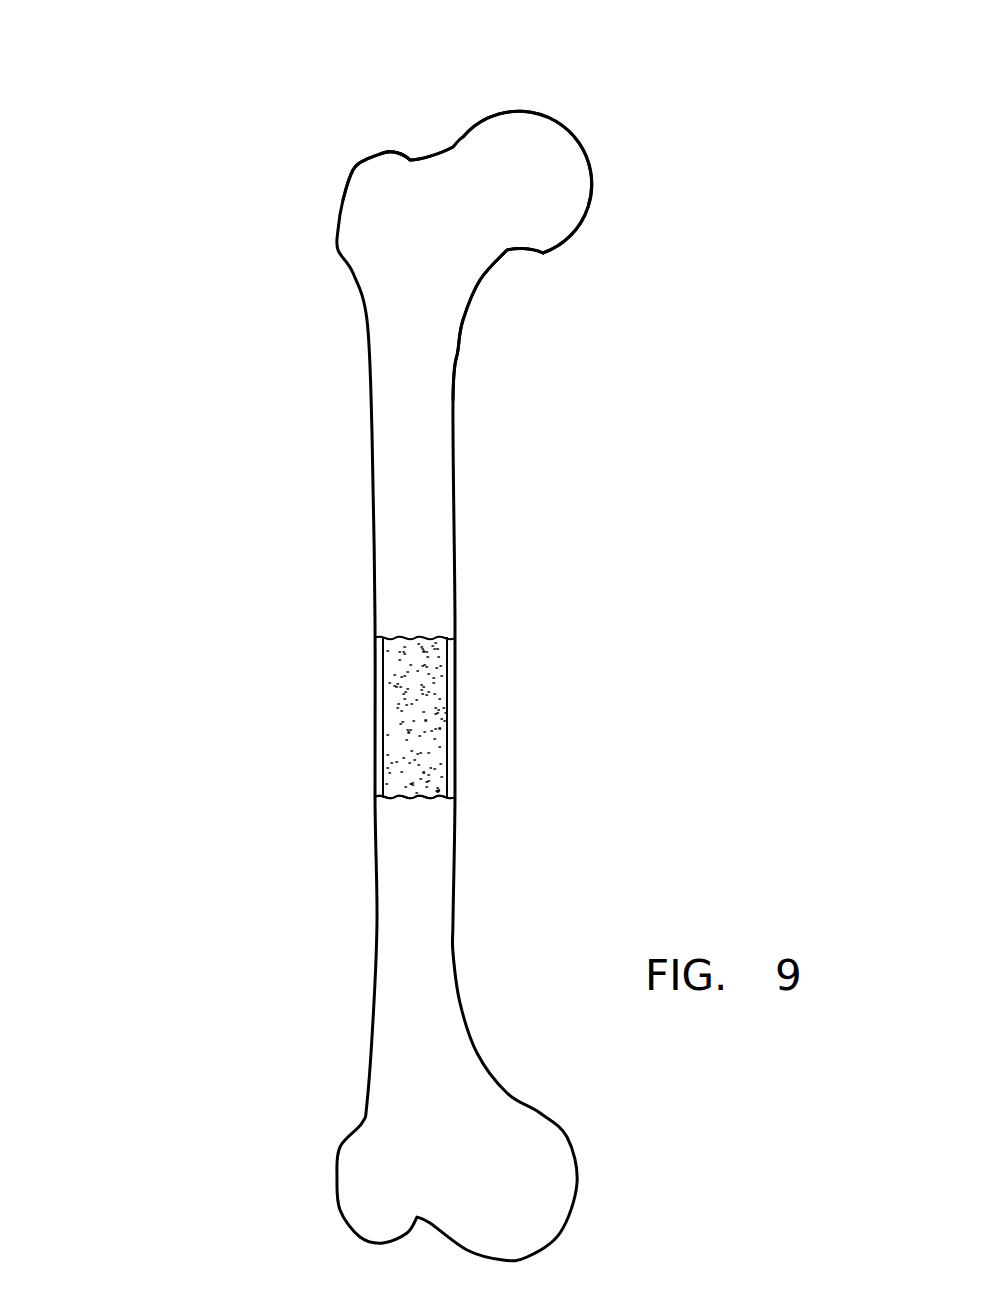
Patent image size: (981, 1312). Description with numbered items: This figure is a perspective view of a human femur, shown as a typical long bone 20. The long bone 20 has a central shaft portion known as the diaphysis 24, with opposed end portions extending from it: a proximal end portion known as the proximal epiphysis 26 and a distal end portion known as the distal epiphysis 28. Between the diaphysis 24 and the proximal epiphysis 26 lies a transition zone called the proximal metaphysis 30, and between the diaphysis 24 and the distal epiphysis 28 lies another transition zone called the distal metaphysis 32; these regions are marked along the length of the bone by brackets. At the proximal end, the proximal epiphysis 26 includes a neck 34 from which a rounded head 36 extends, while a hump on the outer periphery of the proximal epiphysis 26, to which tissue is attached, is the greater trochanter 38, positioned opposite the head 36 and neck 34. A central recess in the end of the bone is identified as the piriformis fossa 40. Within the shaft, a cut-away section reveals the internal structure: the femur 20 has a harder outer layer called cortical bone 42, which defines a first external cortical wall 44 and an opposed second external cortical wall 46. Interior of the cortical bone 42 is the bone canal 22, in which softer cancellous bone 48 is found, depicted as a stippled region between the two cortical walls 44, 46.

The long bone 20 is at (515, 573).
The bone canal 22 is at (415, 623).
The diaphysis 24 is at (172, 362).
The proximal epiphysis 26 is at (172, 113).
The distal epiphysis 28 is at (172, 1105).
The proximal metaphysis 30 is at (172, 278).
The distal metaphysis 32 is at (172, 1025).
The neck 34 is at (508, 250).
The head 36 is at (595, 187).
The greater trochanter 38 is at (355, 168).
The piriformis fossa 40 is at (413, 158).
The cortical bone 42 is at (455, 697).
The first external cortical wall 44 is at (455, 763).
The second external cortical wall 46 is at (375, 722).
The cancellous bone 48 is at (422, 780).